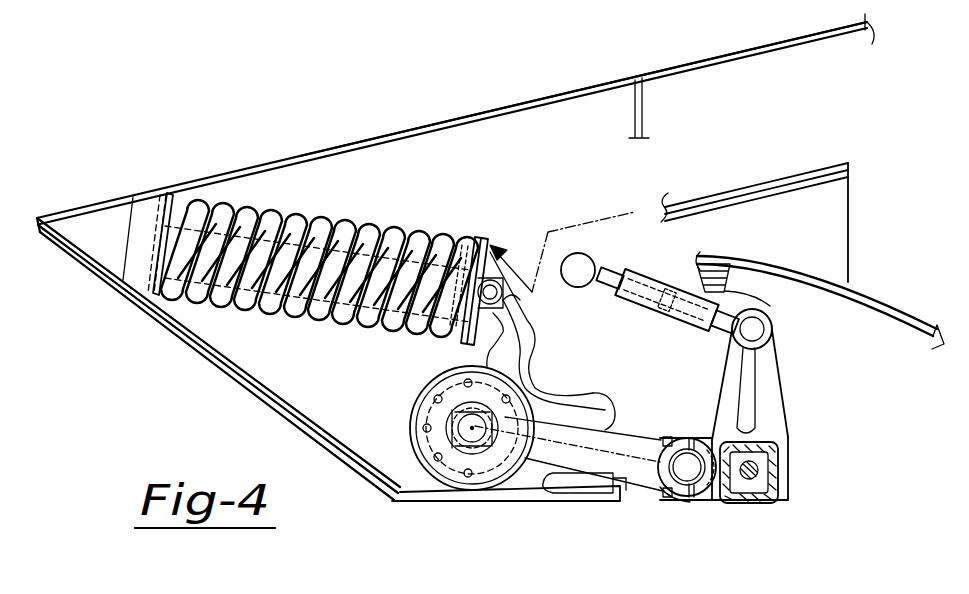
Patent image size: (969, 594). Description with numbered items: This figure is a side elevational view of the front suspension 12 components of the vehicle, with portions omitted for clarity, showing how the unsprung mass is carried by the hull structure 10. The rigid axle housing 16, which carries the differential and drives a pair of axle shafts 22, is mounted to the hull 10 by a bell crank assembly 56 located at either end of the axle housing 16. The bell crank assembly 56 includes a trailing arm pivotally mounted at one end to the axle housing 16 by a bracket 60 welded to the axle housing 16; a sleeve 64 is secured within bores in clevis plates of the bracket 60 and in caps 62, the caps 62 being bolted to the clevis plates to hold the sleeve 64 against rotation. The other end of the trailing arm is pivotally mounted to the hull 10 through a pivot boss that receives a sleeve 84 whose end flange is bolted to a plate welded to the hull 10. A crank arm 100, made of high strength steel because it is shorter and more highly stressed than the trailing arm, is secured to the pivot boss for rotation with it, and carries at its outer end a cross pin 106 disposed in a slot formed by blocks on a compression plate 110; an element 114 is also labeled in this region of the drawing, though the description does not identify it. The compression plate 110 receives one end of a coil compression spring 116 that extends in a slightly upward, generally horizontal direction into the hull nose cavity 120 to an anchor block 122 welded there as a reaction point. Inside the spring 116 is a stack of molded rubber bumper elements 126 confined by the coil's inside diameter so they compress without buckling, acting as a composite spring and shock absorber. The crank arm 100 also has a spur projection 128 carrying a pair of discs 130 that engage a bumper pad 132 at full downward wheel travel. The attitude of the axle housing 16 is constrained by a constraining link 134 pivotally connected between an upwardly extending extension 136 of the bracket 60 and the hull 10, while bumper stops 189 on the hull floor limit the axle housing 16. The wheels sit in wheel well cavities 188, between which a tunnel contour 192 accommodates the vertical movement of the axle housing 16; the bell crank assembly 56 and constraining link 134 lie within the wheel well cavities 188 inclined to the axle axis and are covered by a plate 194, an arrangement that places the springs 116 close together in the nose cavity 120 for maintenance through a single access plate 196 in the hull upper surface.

The hull structure 10 is at (505, 498).
The front suspension 12 is at (788, 492).
The axle housing 16 is at (743, 505).
The axle shaft 22 is at (757, 472).
The bell crank assembly 56 is at (637, 487).
The bracket 60 is at (795, 431).
The cap 62 is at (683, 440).
The sleeve 64 is at (703, 497).
The sleeve 84 is at (420, 420).
The crank arm 100 is at (558, 380).
The cross pin 106 is at (524, 322).
The compression plate 110 is at (534, 294).
The direction arrow 114 is at (562, 252).
The coil compression spring 116 is at (390, 240).
The hull nose cavity 120 is at (380, 200).
The anchor block 122 is at (108, 215).
The bumper element 126 is at (214, 200).
The spur projection 128 is at (594, 400).
The disc 130 is at (600, 430).
The bumper pad 132 is at (545, 480).
The constraining link 134 is at (628, 312).
The extension 136 is at (783, 393).
The wheel well cavity 188 is at (838, 150).
The bumper stop 189 is at (773, 277).
The tunnel contour 192 is at (842, 365).
The plate 194 is at (683, 205).
The access plate 196 is at (300, 156).